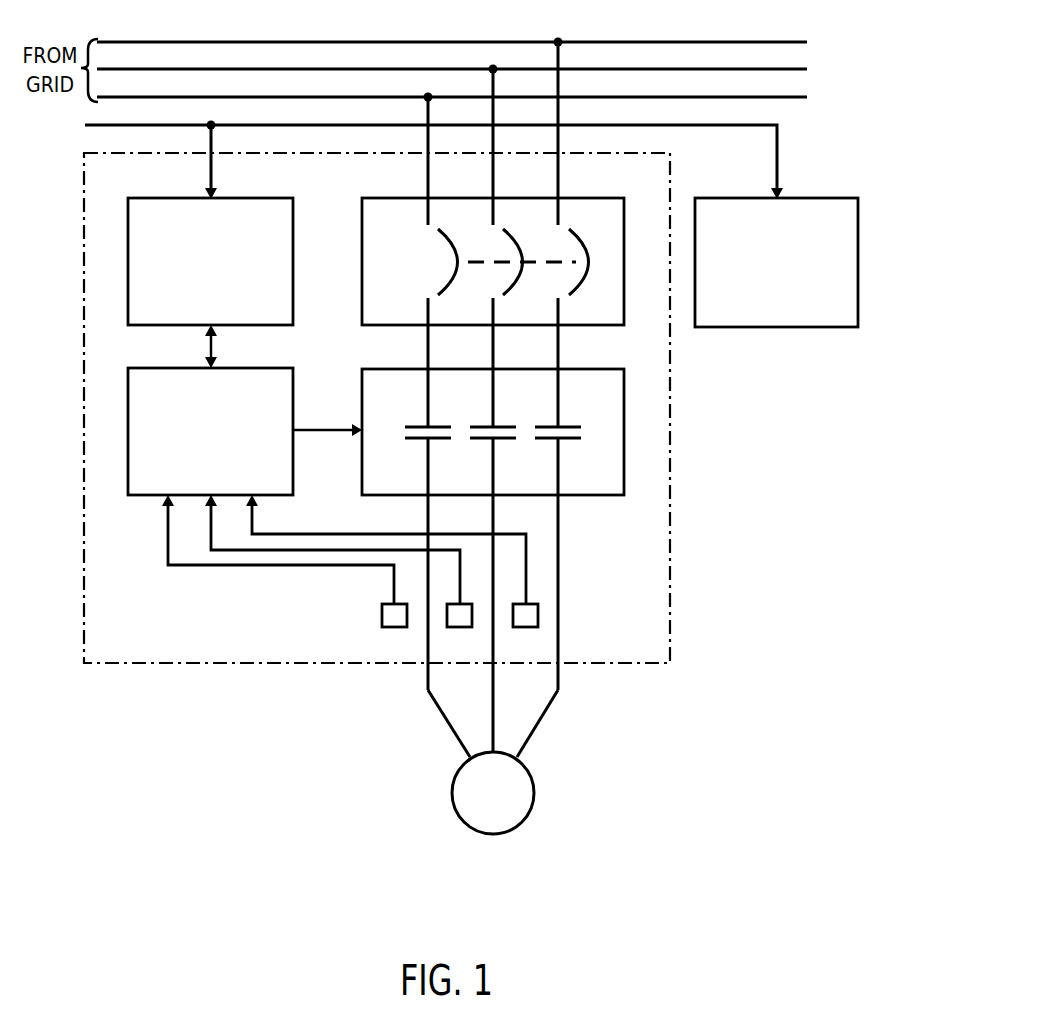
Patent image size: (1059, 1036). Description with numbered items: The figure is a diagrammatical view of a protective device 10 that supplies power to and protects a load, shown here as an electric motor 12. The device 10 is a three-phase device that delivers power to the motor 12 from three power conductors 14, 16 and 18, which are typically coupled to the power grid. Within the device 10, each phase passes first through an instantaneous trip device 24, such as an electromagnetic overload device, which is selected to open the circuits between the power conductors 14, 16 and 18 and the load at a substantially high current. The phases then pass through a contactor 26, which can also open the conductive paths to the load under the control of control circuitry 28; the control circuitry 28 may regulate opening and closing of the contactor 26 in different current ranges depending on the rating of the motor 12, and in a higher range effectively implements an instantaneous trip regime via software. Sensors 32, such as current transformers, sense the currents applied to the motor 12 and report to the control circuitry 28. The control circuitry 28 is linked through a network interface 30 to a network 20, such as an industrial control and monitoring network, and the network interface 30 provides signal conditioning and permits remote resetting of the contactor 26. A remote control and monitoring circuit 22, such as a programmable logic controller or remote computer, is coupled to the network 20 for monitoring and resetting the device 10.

The protective device 10 is at (716, 560).
The electric motor 12 is at (535, 784).
The power conductor 14 is at (180, 41).
The power conductor 16 is at (241, 67).
The power conductor 18 is at (291, 95).
The network 20 is at (143, 128).
The remote control and monitoring circuit 22 is at (720, 328).
The instantaneous trip device 24 is at (625, 230).
The contactor 26 is at (625, 400).
The control circuitry 28 is at (127, 402).
The network interface 30 is at (127, 230).
The sensors 32 is at (526, 628).